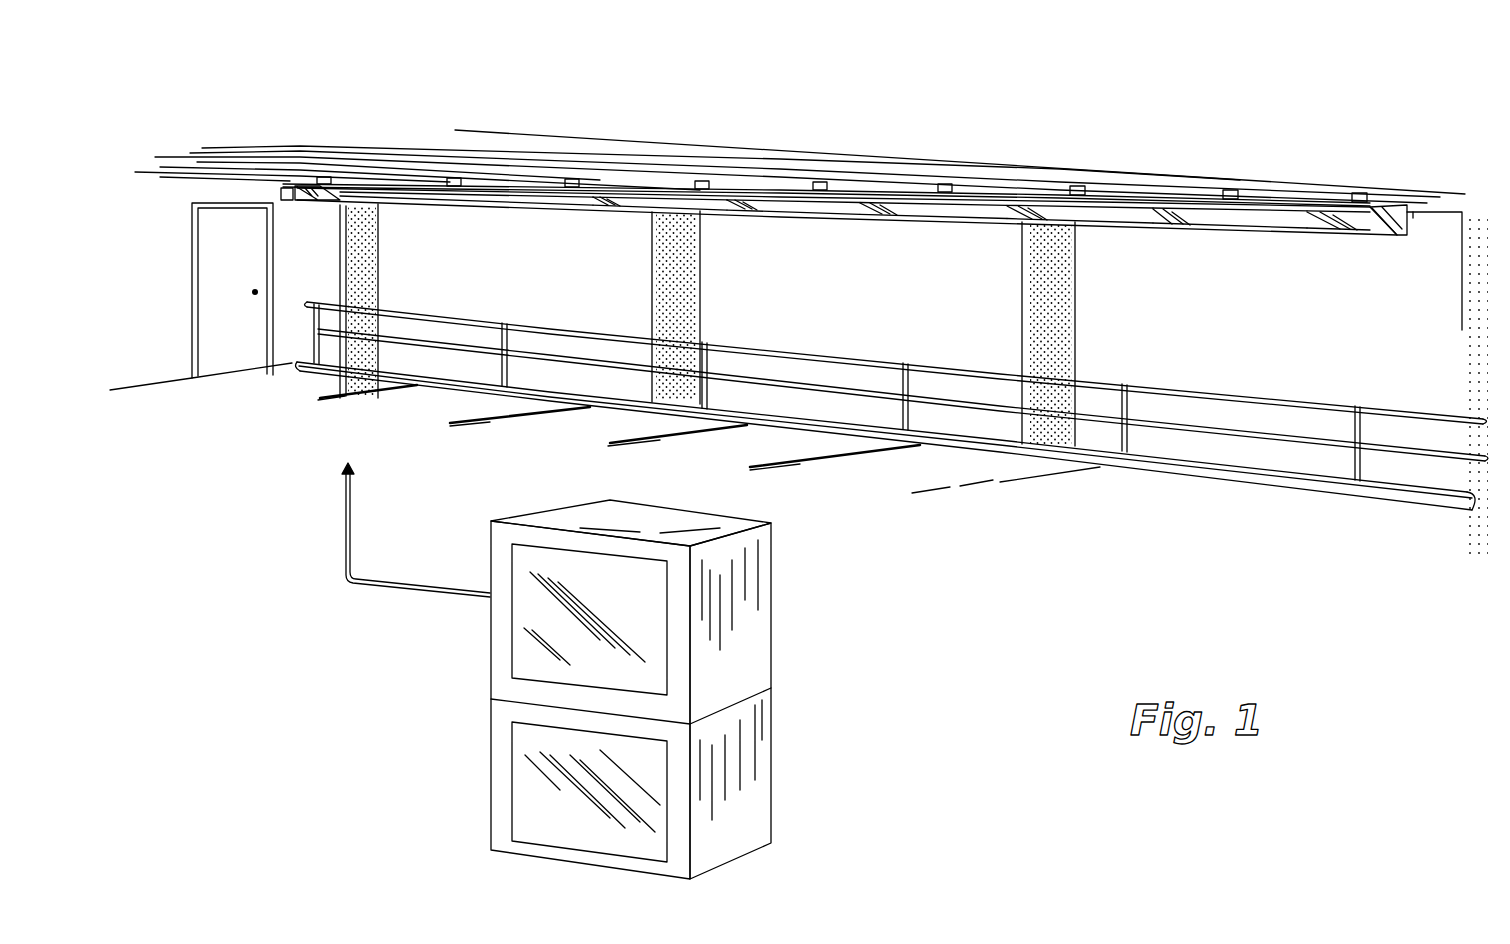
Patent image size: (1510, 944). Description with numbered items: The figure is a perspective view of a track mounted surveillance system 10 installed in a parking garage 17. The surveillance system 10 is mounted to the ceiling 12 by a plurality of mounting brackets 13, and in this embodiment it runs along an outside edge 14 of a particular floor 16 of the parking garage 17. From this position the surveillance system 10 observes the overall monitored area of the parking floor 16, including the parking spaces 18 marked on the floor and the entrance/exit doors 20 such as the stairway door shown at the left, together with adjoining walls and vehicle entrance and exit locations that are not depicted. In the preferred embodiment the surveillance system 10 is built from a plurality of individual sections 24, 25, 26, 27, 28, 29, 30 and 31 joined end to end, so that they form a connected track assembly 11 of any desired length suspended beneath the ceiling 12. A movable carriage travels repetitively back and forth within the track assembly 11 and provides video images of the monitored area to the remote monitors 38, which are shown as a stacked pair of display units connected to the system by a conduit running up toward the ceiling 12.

The surveillance system 10 is at (1410, 124).
The track assembly 11 is at (1342, 252).
The ceiling 12 is at (1440, 202).
The mounting brackets 13 is at (567, 183).
The outside edge 14 is at (1420, 215).
The floor 16 is at (1290, 540).
The parking garage 17 is at (200, 130).
The parking spaces 18 is at (520, 428).
The entrance/exit doors 20 is at (178, 305).
The individual section 24 is at (324, 217).
The individual section 25 is at (467, 209).
The individual section 26 is at (570, 209).
The individual section 27 is at (717, 218).
The individual section 28 is at (818, 222).
The individual section 29 is at (947, 226).
The individual section 30 is at (1095, 232).
The individual section 31 is at (1262, 235).
The remote monitors 38 is at (812, 670).